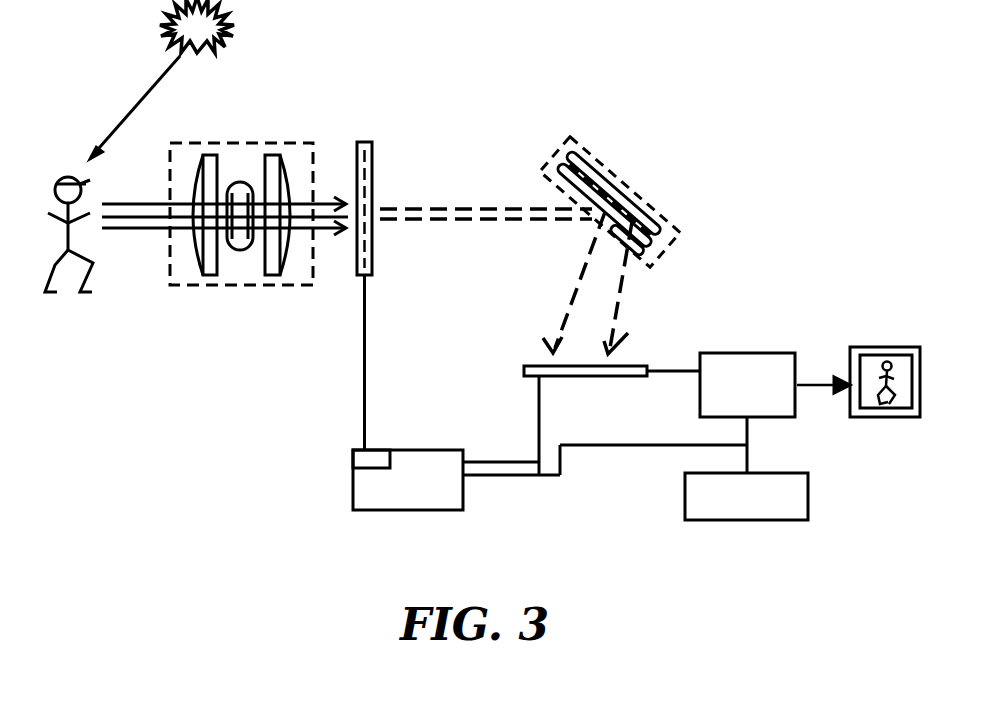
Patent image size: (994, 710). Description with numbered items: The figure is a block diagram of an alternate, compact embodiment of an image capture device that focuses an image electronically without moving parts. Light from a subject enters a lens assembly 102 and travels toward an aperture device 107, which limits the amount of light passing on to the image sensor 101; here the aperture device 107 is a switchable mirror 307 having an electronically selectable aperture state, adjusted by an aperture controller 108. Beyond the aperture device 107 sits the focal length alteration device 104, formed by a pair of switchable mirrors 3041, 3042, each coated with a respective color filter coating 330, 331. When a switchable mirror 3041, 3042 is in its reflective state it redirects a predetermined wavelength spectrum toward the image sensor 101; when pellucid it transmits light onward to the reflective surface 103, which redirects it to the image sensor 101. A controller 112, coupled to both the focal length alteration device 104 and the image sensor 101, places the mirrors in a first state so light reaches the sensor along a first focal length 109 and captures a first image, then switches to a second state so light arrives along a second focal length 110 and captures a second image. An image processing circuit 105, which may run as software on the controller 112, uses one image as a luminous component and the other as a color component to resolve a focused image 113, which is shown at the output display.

The image sensor 101 is at (581, 377).
The lens assembly 102 is at (240, 286).
The reflective surface 103 is at (595, 160).
The focal length alteration device 104 is at (645, 265).
The image processing circuit 105 is at (745, 353).
The aperture device 107 is at (372, 170).
The aperture controller 108 is at (353, 462).
The first focal length 109 is at (567, 318).
The second focal length 110 is at (622, 287).
The controller 112 is at (420, 450).
The focused image 113 is at (872, 347).
The switchable mirror 307 is at (368, 245).
The color filter coating 330 is at (577, 188).
The color filter coating 331 is at (627, 197).
The switchable mirror 3041 is at (561, 165).
The switchable mirror 3042 is at (576, 146).